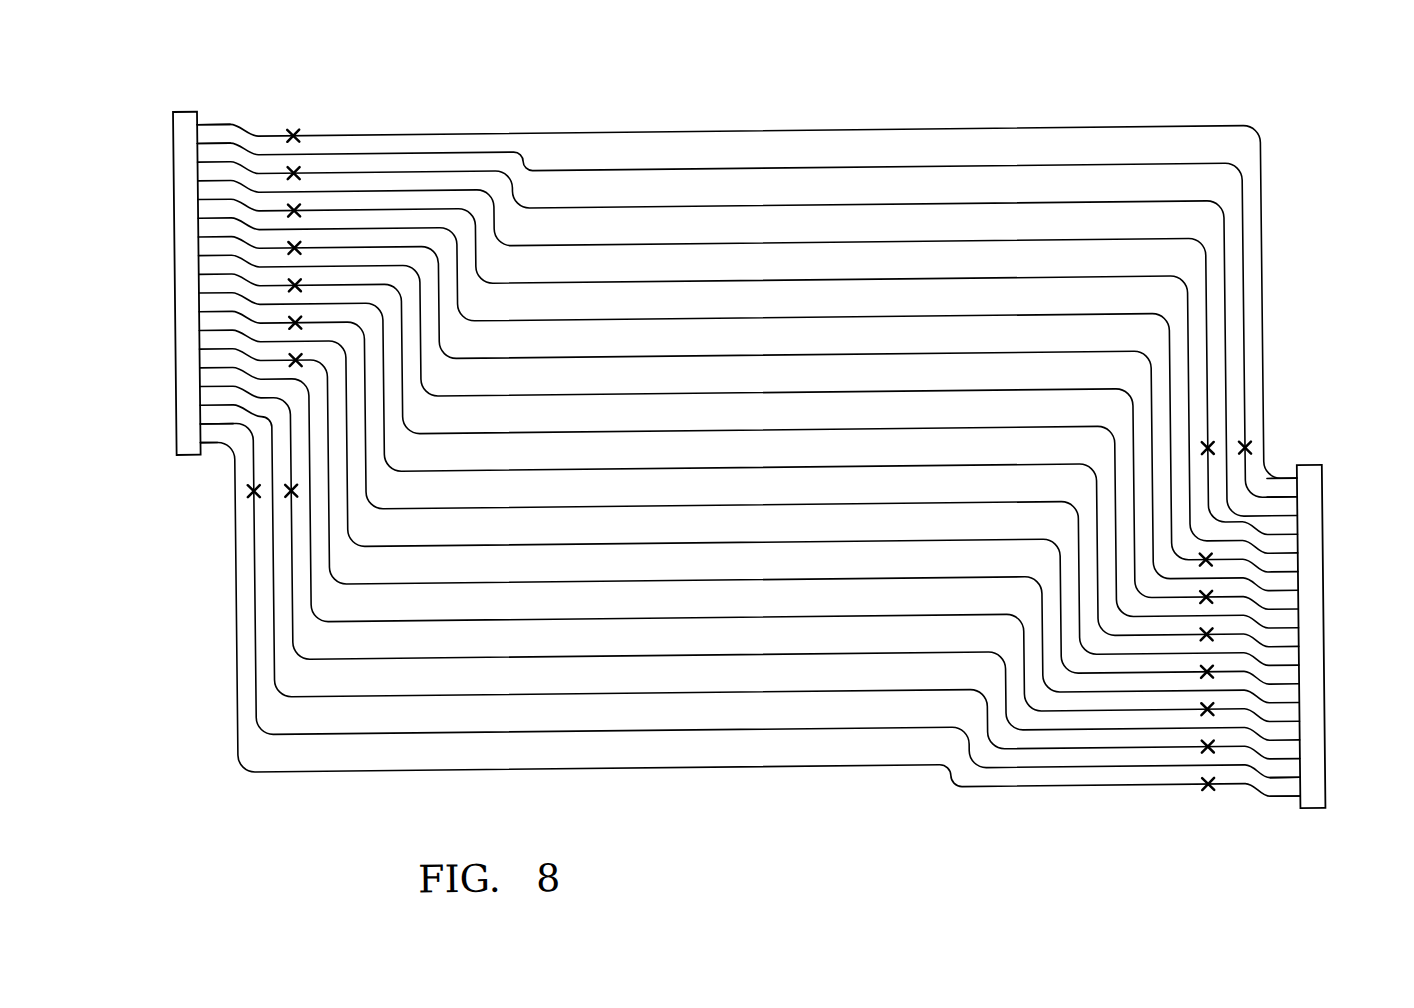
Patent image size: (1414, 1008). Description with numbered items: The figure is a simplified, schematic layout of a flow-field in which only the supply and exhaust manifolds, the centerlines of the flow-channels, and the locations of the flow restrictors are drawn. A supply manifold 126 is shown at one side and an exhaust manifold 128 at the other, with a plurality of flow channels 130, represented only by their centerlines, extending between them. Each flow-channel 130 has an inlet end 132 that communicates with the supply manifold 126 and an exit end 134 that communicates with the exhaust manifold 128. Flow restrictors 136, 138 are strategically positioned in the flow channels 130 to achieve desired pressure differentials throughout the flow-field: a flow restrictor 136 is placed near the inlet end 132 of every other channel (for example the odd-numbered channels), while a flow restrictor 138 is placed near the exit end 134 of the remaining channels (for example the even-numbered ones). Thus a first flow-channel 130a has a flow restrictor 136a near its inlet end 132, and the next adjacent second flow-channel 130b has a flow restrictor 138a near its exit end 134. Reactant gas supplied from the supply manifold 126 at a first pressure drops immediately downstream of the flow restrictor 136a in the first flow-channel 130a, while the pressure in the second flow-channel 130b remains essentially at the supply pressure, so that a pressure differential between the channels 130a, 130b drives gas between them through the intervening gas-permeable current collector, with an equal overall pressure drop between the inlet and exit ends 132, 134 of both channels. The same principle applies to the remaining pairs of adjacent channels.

The supply manifold 126 is at (182, 130).
The exhaust manifold 128 is at (1308, 532).
The flow channels 130 is at (748, 452).
The first flow-channel 130a is at (757, 137).
The second flow-channel 130b is at (829, 174).
The inlet end 132 is at (212, 122).
The exit end 134 is at (1279, 508).
The flow restrictor 136 is at (291, 288).
The flow restrictor 136a is at (294, 138).
The flow restrictor 138 is at (1199, 758).
The flow restrictor 138a is at (1242, 458).